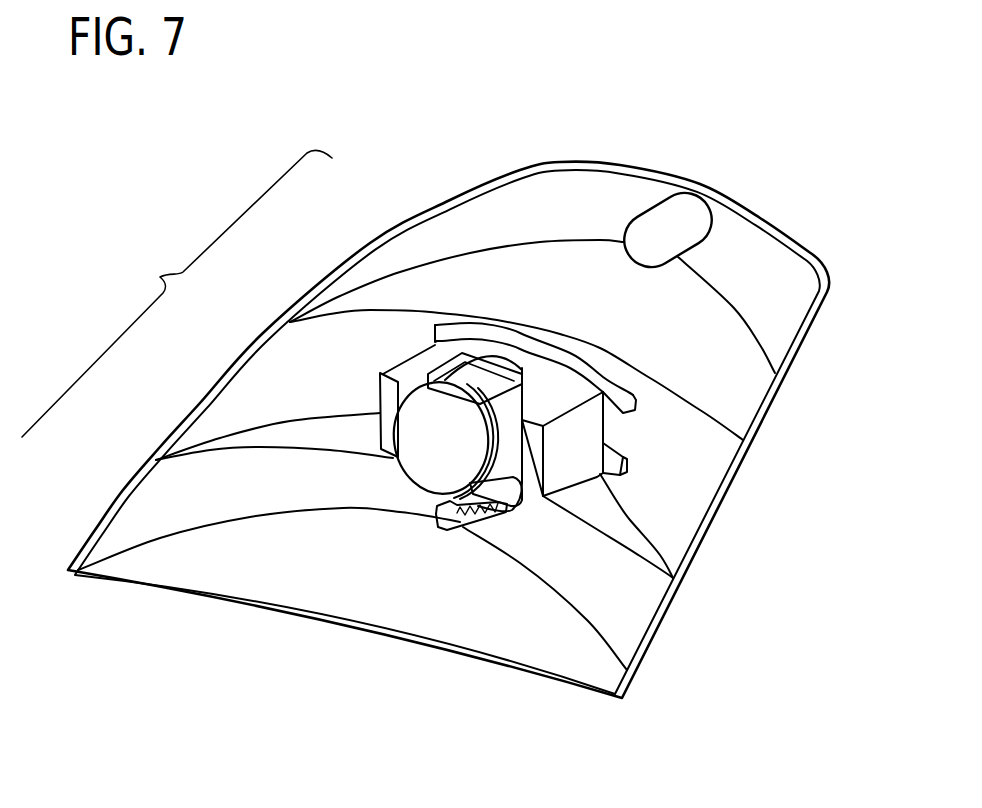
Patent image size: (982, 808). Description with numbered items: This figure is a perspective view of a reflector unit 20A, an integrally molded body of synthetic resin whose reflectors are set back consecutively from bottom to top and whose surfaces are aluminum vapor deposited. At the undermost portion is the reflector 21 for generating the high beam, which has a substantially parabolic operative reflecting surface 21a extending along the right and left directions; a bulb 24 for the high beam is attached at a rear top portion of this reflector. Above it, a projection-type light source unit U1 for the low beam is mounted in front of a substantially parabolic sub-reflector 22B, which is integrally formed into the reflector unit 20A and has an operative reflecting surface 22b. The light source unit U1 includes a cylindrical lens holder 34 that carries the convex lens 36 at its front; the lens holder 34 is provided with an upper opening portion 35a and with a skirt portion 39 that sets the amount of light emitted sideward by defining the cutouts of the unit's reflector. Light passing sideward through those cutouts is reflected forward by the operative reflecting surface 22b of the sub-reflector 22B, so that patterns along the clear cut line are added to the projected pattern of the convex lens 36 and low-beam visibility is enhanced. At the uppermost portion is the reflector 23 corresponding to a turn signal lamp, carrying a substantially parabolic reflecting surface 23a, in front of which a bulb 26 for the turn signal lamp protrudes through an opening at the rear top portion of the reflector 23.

The reflector unit 20A is at (177, 293).
The reflector 21 is at (120, 495).
The operative reflecting surface 21a is at (620, 603).
The sub-reflector 22B is at (220, 382).
The operative reflecting surface 22b is at (687, 493).
The reflector 23 is at (370, 247).
The reflecting surface 23a is at (763, 247).
The bulb 24 is at (446, 523).
The bulb 26 is at (650, 216).
The lens holder 34 is at (500, 447).
The upper opening portion 35a is at (487, 367).
The convex lens 36 is at (427, 455).
The skirt portion 39 is at (565, 458).
The light source unit U1 is at (388, 472).